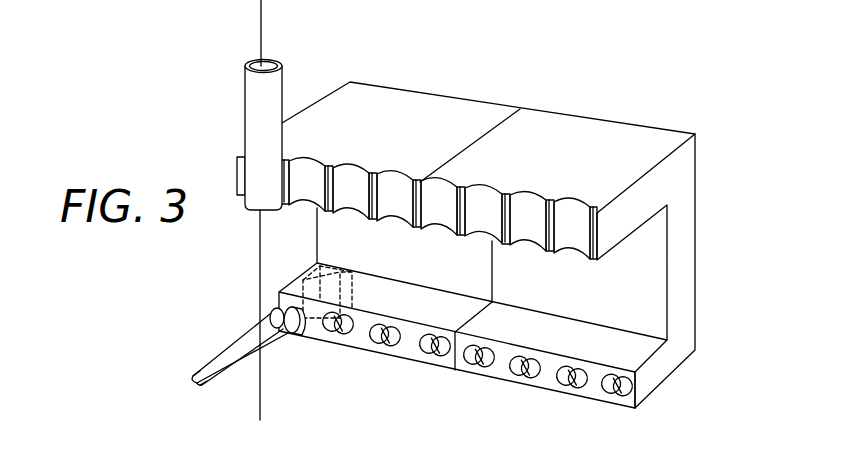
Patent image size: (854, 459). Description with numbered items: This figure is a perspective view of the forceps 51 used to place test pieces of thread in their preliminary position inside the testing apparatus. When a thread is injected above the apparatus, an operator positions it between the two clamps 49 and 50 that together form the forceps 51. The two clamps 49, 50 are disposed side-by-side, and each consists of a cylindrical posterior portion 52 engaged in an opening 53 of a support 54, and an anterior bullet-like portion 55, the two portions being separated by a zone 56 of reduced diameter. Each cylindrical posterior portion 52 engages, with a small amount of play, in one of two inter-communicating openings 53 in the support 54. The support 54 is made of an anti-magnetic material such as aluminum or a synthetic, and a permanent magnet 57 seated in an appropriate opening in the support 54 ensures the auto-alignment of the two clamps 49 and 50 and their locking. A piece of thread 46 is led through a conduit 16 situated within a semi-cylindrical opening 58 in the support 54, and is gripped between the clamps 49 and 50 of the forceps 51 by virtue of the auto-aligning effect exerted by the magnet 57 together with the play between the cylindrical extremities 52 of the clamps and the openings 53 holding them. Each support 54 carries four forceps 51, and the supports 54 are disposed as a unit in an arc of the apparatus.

The conduit 16 is at (253, 116).
The piece of thread 46 is at (260, 28).
The clamp 49 is at (190, 373).
The clamp 50 is at (208, 393).
The forceps 51 is at (210, 364).
The cylindrical posterior portion 52 is at (303, 325).
The opening 53 is at (381, 343).
The support 54 is at (448, 376).
The anterior bullet-like portion 55 is at (238, 362).
The zone of reduced diameter 56 is at (296, 333).
The permanent magnet 57 is at (335, 275).
The semi-cylindrical opening 58 is at (388, 185).